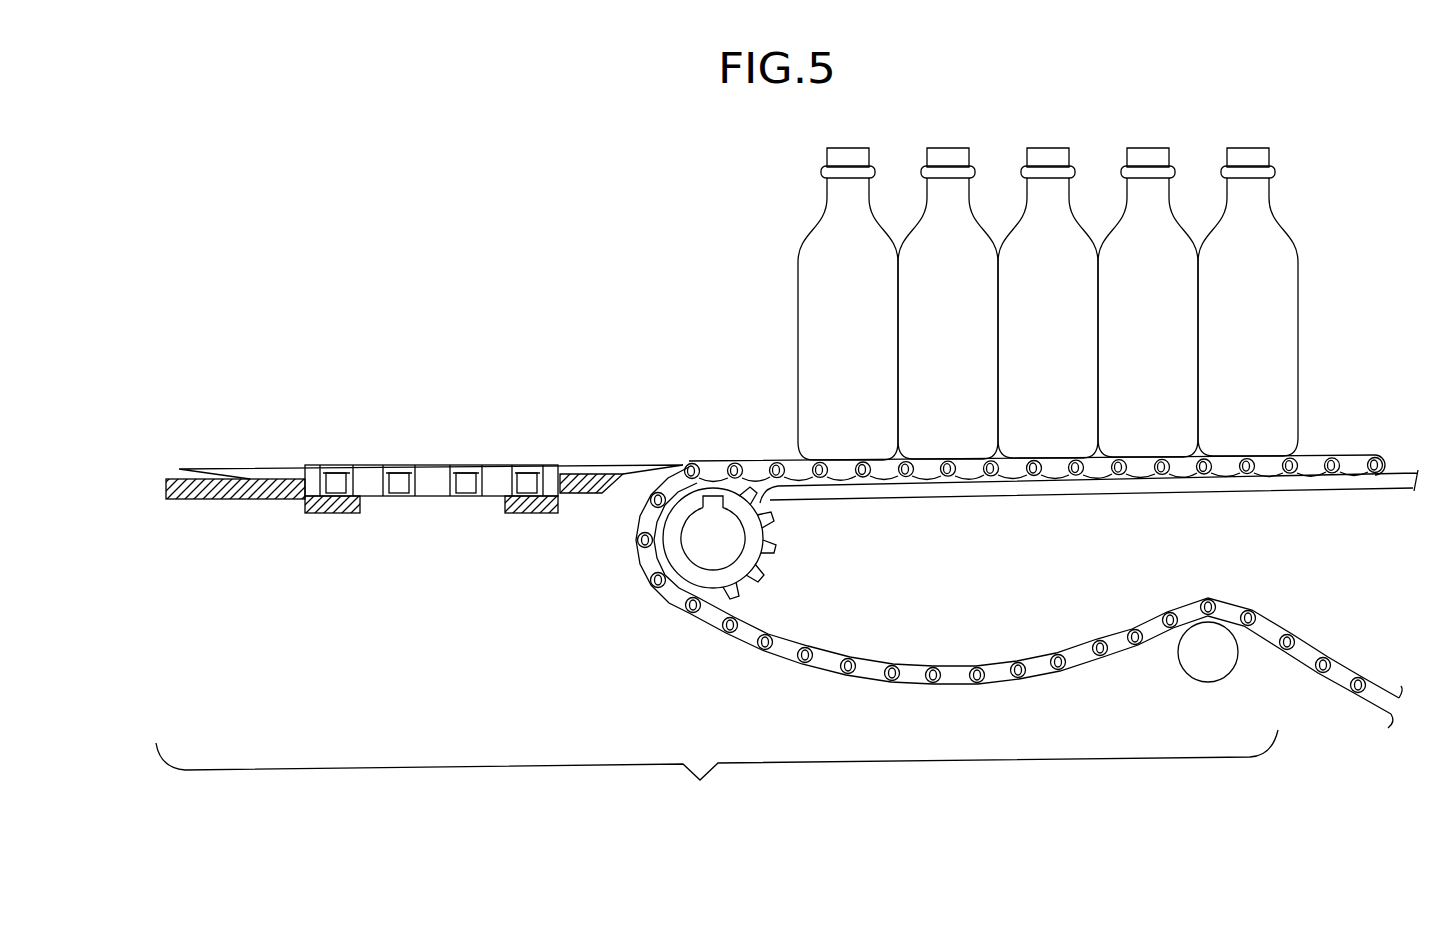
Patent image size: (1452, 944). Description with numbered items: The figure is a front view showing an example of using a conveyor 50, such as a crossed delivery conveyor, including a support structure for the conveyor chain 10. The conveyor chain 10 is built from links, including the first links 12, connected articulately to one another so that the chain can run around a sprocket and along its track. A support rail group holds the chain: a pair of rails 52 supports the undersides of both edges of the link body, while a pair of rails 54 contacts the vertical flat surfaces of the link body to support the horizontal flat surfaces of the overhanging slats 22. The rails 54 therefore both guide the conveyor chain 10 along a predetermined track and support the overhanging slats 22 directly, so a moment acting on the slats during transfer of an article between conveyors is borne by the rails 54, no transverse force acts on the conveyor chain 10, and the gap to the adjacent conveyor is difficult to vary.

The conveyor chain 10 is at (463, 446).
The first links 12 is at (425, 496).
The overhanging slats 22 is at (248, 466).
The conveyor 50 is at (787, 634).
The rails 52 is at (333, 514).
The rails 54 is at (235, 500).